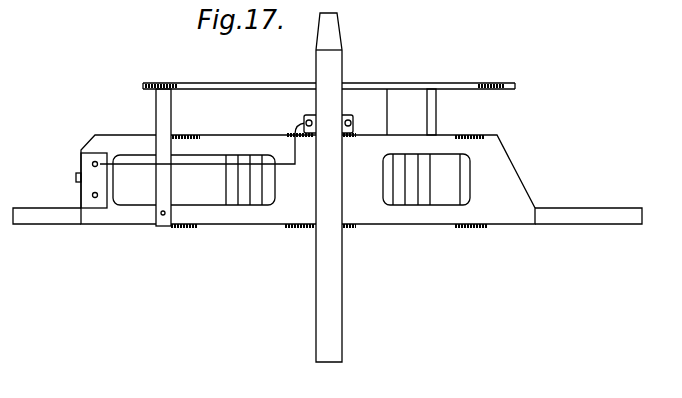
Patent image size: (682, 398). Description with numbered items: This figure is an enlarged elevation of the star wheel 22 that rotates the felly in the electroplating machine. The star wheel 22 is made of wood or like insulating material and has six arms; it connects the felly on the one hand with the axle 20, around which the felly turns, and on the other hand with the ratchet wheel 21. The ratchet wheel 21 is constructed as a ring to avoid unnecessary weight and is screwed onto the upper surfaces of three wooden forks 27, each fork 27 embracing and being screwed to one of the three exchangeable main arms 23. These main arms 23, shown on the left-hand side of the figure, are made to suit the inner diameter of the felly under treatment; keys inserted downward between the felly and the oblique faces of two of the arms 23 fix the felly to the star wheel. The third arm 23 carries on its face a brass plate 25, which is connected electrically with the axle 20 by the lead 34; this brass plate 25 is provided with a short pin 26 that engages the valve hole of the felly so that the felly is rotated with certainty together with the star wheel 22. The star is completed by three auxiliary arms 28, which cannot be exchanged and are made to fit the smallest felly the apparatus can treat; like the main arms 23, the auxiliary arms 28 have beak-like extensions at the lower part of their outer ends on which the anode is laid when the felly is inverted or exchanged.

The axle 20 is at (335, 277).
The ratchet wheel 21 is at (165, 82).
The star wheel 22 is at (372, 214).
The arms 23 is at (45, 217).
The brass plate 25 is at (82, 159).
The short pin 26 is at (76, 178).
The wooden fork 27 is at (165, 108).
The auxiliary arms 28 is at (572, 212).
The lead 34 is at (289, 166).